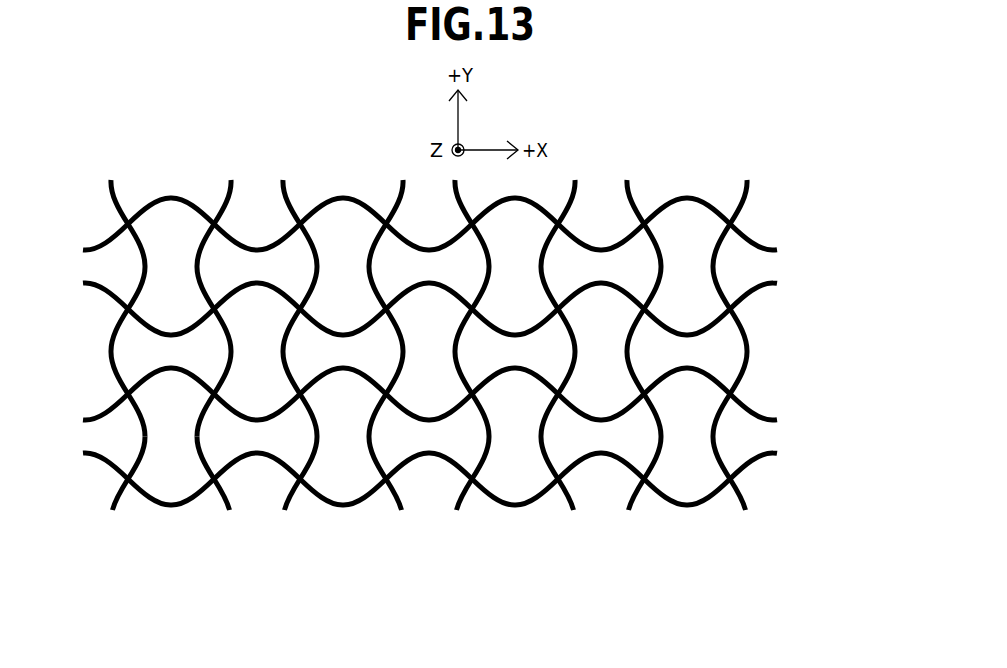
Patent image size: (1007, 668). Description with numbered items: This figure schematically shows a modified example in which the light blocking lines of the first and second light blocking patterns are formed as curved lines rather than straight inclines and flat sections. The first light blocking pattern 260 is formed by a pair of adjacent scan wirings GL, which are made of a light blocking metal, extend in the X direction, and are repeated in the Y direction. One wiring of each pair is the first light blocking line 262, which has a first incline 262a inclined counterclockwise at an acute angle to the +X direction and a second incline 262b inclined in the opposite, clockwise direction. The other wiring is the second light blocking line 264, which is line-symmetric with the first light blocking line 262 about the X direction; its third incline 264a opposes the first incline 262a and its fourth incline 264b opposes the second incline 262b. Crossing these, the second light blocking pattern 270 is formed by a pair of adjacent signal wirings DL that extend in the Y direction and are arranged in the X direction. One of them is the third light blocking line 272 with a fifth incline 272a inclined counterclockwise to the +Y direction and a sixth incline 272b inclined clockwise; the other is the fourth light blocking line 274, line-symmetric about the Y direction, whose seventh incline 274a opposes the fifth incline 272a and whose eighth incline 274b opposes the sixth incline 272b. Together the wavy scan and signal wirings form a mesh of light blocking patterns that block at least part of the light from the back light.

The first light blocking pattern 260 is at (487, 322).
The first light blocking line 262 is at (452, 280).
The second light blocking line 264 is at (452, 391).
The first incline 262a is at (113, 237).
The second incline 262b is at (203, 208).
The third incline 264a is at (117, 297).
The fourth incline 264b is at (207, 320).
The second light blocking pattern 270 is at (417, 418).
The third light blocking line 272 is at (365, 395).
The fourth light blocking line 274 is at (472, 395).
The fifth incline 272a is at (133, 410).
The sixth incline 272b is at (130, 468).
The seventh incline 274a is at (200, 418).
The eighth incline 274b is at (203, 467).